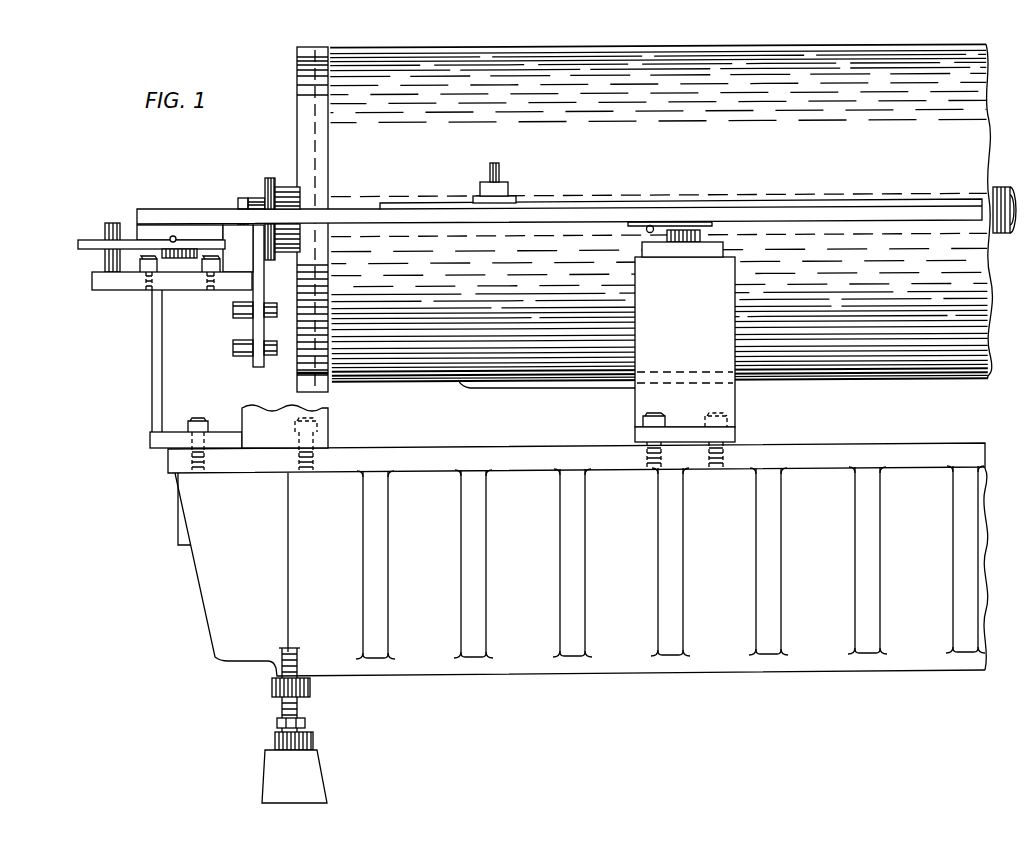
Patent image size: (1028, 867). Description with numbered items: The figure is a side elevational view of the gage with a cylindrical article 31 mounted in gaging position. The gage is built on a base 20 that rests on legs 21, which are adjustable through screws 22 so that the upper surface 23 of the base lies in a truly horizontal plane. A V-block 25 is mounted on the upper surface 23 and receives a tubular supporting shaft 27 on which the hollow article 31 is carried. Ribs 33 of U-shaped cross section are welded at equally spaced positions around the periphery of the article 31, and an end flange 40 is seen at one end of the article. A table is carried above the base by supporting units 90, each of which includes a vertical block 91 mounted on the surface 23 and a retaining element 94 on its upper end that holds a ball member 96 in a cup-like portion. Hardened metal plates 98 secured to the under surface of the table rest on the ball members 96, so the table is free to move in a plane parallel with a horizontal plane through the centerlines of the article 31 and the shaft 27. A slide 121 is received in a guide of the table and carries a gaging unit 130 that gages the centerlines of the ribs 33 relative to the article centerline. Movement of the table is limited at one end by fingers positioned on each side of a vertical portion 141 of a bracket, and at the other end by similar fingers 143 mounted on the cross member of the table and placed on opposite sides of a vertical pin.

The base 20 is at (822, 660).
The legs 21 is at (310, 786).
The screws 22 is at (282, 712).
The upper surface 23 is at (540, 448).
The V-block 25 is at (258, 270).
The supporting shaft 27 is at (253, 198).
The article 31 is at (412, 370).
The ribs 33 is at (455, 57).
The flange 40 is at (349, 180).
The supporting units 90 is at (756, 257).
The vertical blocks 91 is at (327, 407).
The retaining elements 94 is at (138, 268).
The ball members 96 is at (176, 262).
The hardened metal plates 98 is at (173, 238).
The slide 121 is at (478, 196).
The gaging unit 130 is at (503, 183).
The vertical portion 141 is at (108, 227).
The fingers 143 is at (94, 248).